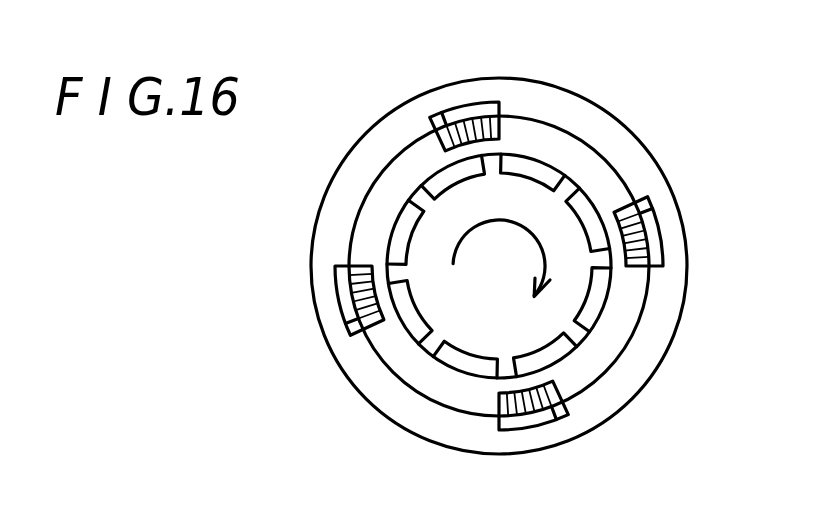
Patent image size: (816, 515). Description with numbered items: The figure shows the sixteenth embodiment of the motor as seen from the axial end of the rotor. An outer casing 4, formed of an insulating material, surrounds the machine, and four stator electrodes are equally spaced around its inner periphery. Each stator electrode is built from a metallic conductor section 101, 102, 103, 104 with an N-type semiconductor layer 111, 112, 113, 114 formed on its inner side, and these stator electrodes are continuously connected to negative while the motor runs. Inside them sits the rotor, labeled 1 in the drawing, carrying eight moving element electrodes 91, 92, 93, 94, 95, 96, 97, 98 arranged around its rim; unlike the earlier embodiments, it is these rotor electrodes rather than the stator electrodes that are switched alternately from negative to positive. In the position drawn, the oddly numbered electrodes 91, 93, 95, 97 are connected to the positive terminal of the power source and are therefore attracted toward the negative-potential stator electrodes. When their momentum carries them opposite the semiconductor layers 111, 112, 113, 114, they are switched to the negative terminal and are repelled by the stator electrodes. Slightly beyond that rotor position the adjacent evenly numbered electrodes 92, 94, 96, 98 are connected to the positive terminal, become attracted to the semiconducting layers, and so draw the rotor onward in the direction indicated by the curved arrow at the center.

The stator core 1 is at (570, 170).
The casing 4 is at (333, 170).
The moving element electrode 91 is at (440, 175).
The moving element electrode 92 is at (517, 157).
The moving element electrode 93 is at (580, 197).
The moving element electrode 94 is at (600, 285).
The moving element electrode 95 is at (567, 353).
The moving element electrode 96 is at (473, 370).
The moving element electrode 97 is at (412, 335).
The moving element electrode 98 is at (392, 242).
The metallic conductor section 101 is at (443, 75).
The metallic conductor section 102 is at (699, 227).
The metallic conductor section 103 is at (533, 448).
The metallic conductor section 104 is at (292, 305).
The N-type semiconductor layer 111 is at (433, 113).
The N-type semiconductor layer 112 is at (650, 210).
The N-type semiconductor layer 113 is at (557, 417).
The N-type semiconductor layer 114 is at (345, 330).